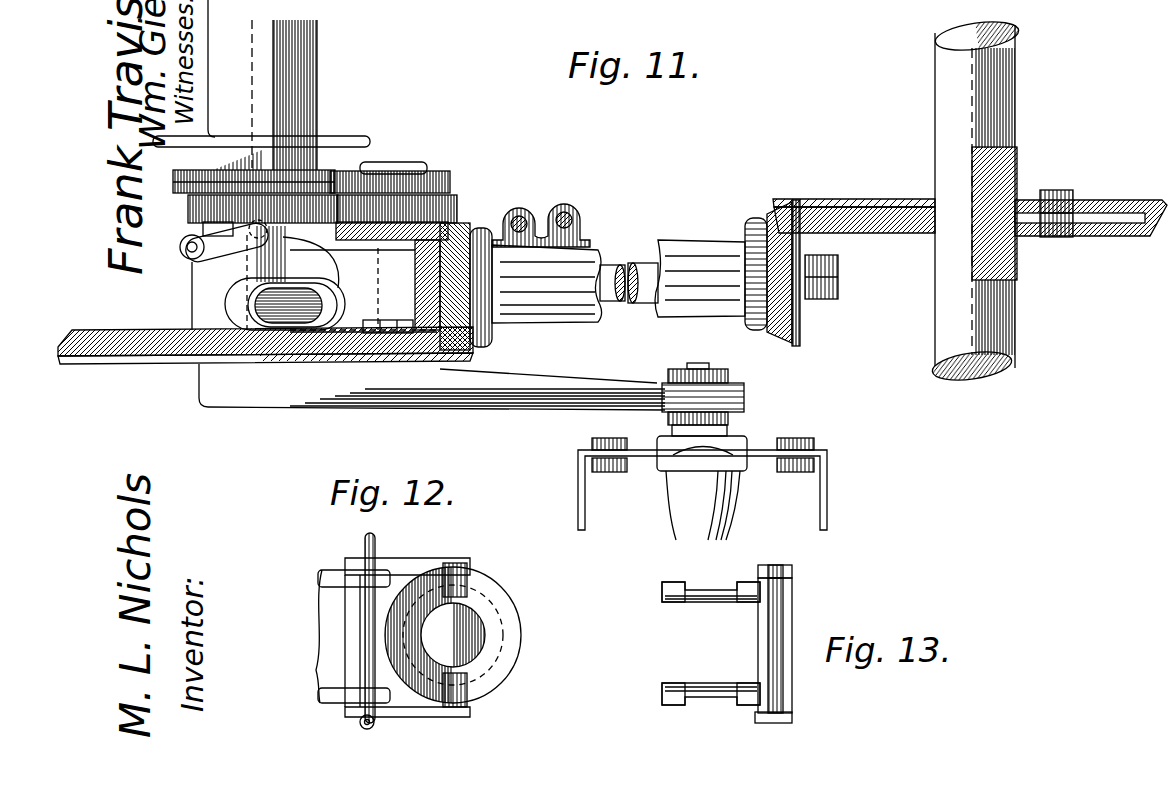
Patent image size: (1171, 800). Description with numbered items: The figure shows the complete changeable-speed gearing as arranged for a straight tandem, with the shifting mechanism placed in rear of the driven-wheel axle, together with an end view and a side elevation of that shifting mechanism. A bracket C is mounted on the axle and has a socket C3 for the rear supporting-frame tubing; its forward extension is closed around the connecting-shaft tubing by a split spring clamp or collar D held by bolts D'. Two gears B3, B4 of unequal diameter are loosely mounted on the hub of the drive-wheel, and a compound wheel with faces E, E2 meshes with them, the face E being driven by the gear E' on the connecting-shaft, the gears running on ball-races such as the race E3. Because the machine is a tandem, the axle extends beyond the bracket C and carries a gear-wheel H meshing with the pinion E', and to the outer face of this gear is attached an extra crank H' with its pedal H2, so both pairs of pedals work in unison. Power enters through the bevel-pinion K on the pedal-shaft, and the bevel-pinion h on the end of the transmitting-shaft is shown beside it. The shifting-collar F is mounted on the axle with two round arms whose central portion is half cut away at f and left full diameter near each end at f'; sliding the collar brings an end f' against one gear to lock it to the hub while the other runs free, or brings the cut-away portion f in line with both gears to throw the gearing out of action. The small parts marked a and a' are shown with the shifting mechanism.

In FIG. 11, the gear B3 is at (241, 186).
In FIG. 11, the gear B4 is at (244, 212).
In FIG. 11, the ball-race E3 is at (443, 178).
In FIG. 11, the gear face E2 is at (458, 206).
In FIG. 11, the gear face E is at (386, 278).
In FIG. 11, the gear on connecting-shaft E' is at (489, 297).
In FIG. 11, the split spring clamp or collar D is at (646, 281).
In FIG. 11, the bolts D' is at (550, 223).
In FIG. 11, the bracket C is at (278, 296).
In FIG. 12, the bracket C is at (353, 636).
In FIG. 11, the socket C3 is at (285, 295).
In FIG. 11, the forwardly-extending socket a is at (285, 237).
In FIG. 12, the forwardly-extending socket a is at (407, 631).
In FIG. 13, the forwardly-extending socket a is at (790, 563).
In FIG. 11, the pin lever a' is at (225, 248).
In FIG. 12, the pin lever a' is at (380, 631).
In FIG. 11, the gear-wheel H is at (265, 358).
In FIG. 11, the extra crank H' is at (432, 400).
In FIG. 11, the pedal H2 is at (685, 484).
In FIG. 11, the bevel-pinion K is at (970, 204).
In FIG. 11, the nut h is at (817, 306).
In FIG. 12, the shifting-collar F is at (463, 635).
In FIG. 13, the shifting-collar F is at (789, 622).
In FIG. 13, the cut-away portion f is at (711, 641).
In FIG. 13, the full-diameter end f' is at (704, 642).